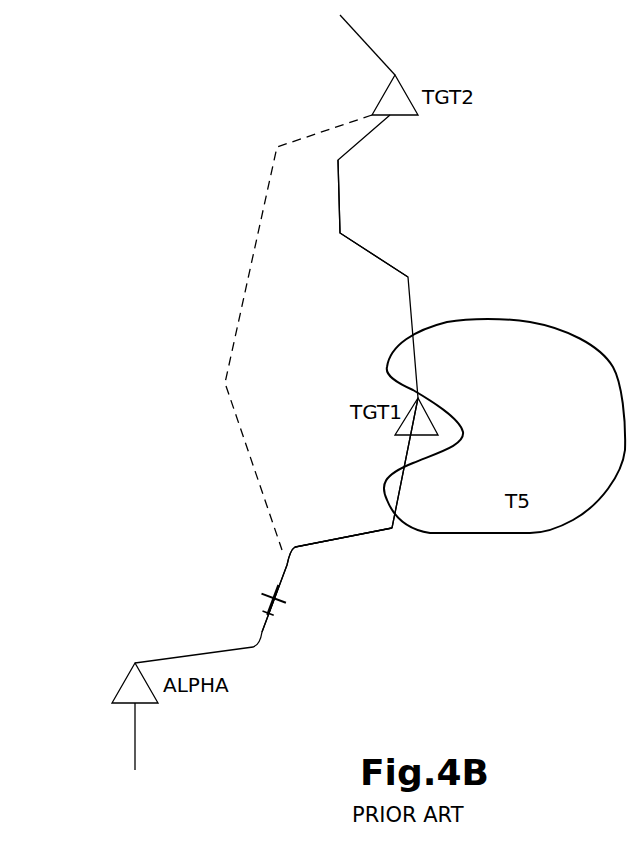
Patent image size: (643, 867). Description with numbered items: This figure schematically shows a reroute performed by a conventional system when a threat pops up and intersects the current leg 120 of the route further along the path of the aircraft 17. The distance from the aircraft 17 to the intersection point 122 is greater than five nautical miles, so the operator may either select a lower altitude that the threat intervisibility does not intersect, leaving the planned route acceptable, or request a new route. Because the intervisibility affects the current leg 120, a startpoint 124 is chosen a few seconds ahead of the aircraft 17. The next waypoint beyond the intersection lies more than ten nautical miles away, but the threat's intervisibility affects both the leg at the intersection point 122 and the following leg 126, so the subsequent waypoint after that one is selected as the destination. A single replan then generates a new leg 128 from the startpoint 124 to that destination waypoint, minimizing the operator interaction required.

The aircraft 17 is at (272, 595).
The leg 120 is at (337, 530).
The intersection point 122 is at (397, 525).
The startpoint 124 is at (293, 570).
The leg 126 is at (365, 247).
The new leg 128 is at (238, 338).